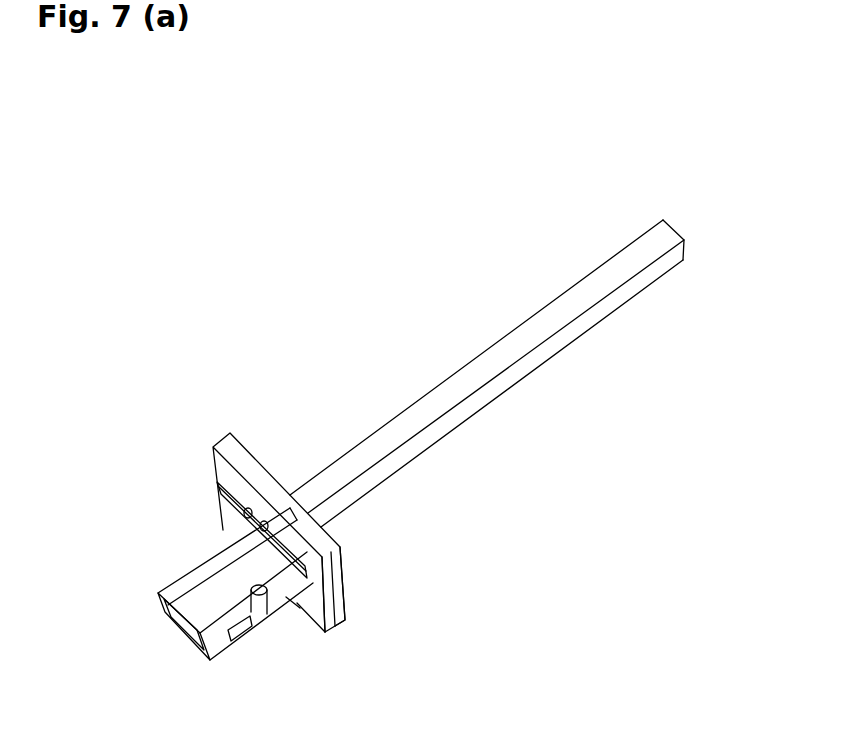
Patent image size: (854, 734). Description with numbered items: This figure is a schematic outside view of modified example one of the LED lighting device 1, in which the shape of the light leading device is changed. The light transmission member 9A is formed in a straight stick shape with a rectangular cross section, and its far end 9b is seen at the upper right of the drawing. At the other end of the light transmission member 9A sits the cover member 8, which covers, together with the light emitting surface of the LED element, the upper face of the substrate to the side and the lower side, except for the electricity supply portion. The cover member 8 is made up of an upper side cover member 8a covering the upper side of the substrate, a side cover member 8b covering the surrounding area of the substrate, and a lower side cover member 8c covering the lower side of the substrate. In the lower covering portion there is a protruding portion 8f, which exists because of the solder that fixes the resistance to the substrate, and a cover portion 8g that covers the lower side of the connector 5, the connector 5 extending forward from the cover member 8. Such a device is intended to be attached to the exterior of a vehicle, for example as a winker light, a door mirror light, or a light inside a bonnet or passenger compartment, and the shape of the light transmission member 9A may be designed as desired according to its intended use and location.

The rod assembly 1 is at (321, 323).
The connector 5 is at (165, 588).
The cover member 8 is at (443, 583).
The upper side cover member 8a is at (412, 592).
The side cover member 8b is at (408, 618).
The lower side cover member 8c is at (286, 602).
The protruding portion 8f is at (215, 492).
The cover portion 8g is at (240, 517).
The light transmission member 9A is at (499, 292).
The rod end 9b is at (680, 233).